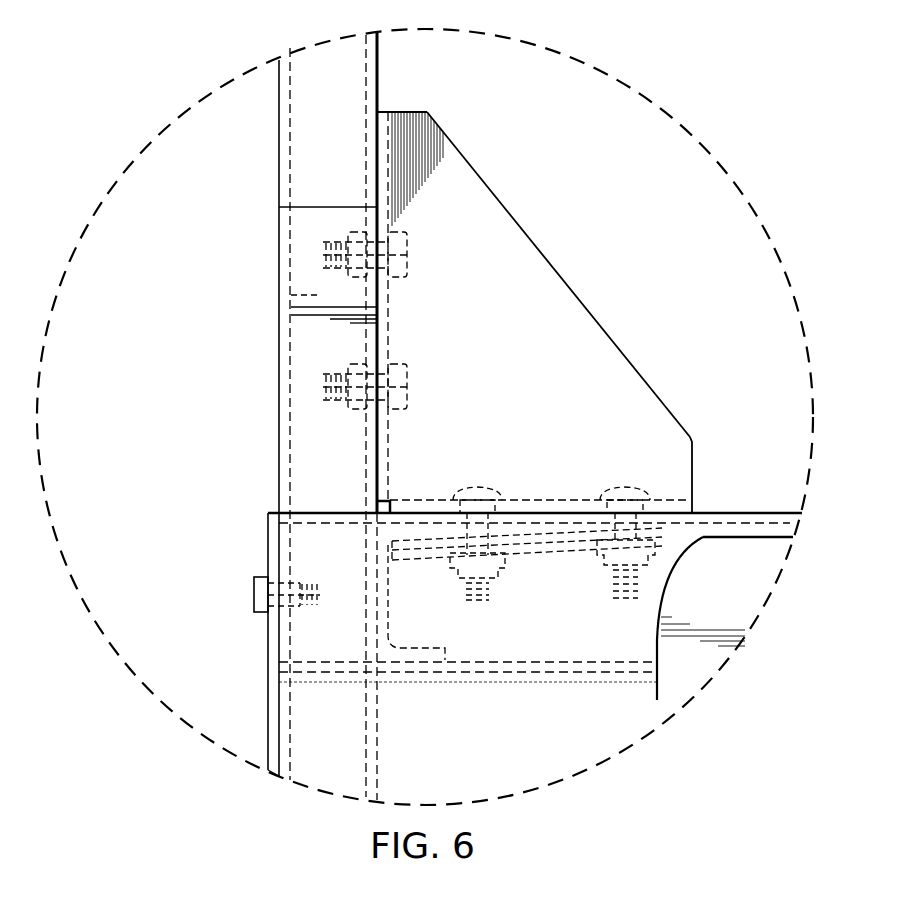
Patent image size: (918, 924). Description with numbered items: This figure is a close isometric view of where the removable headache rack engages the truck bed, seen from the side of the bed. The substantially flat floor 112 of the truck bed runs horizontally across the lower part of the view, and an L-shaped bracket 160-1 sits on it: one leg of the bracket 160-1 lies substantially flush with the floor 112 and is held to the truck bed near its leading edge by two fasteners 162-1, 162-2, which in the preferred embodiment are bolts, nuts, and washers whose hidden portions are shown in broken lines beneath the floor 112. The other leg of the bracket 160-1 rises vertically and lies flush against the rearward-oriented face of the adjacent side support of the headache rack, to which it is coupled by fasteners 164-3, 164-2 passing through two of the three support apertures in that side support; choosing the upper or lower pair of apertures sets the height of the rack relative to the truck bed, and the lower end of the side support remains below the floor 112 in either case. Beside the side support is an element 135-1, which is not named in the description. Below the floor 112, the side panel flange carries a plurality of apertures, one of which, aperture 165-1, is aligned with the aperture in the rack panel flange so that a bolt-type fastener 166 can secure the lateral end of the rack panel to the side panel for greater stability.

The column 135-1 is at (272, 171).
The bracket 160-1 is at (563, 312).
The fastener 164-3 is at (410, 256).
The fastener 164-2 is at (410, 388).
The floor 112 is at (740, 512).
The fastener 162-1 is at (478, 488).
The fastener 162-2 is at (623, 492).
The aperture 165-1 is at (283, 580).
The fastener 166 is at (252, 593).